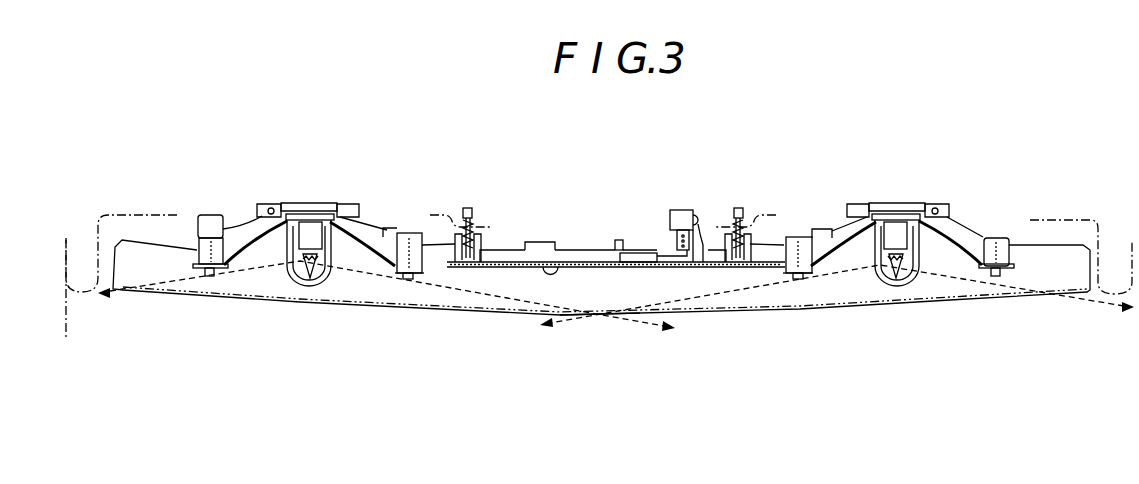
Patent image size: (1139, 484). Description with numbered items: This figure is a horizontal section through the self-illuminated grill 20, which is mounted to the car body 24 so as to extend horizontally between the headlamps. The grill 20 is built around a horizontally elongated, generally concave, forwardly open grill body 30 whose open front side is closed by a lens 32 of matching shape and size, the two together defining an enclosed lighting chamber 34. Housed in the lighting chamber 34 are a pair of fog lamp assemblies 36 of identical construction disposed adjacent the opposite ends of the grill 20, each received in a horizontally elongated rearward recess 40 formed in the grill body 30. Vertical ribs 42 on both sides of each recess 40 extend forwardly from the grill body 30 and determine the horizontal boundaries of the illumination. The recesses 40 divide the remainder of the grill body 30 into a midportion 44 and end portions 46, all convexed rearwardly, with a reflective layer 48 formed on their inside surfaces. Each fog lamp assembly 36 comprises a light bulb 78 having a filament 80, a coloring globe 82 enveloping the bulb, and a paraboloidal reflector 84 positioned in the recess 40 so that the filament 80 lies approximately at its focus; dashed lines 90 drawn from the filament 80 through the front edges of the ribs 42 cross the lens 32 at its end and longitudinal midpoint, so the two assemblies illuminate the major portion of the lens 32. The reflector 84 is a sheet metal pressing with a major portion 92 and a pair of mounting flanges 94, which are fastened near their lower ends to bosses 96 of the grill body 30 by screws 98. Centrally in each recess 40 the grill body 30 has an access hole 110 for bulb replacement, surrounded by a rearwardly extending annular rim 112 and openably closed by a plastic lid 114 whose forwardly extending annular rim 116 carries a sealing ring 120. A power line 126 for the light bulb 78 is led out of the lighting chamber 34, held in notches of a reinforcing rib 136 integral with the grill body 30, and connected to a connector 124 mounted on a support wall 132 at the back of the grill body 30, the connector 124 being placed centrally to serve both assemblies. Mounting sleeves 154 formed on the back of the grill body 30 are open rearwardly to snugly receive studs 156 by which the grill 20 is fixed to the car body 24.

The self-illuminated grill 20 is at (1066, 118).
The car body 24 is at (67, 299).
The grill body 30 is at (583, 251).
The lens 32 is at (600, 316).
The lighting chamber 34 is at (605, 300).
The fog lamp assembly 36 is at (281, 285).
The rearward recess 40 is at (409, 232).
The vertical rib 42 is at (199, 213).
The midportion 44 is at (560, 243).
The end portion 46 is at (177, 214).
The reflective layer 48 is at (138, 295).
The light bulb 78 is at (312, 288).
The filament 80 is at (300, 289).
The coloring globe 82 is at (336, 284).
The paraboloidal reflector 84 is at (388, 229).
The dashed lines 90 is at (187, 280).
The major portion 92 is at (246, 212).
The mounting flange 94 is at (226, 269).
The boss 96 is at (221, 215).
The screw 98 is at (210, 277).
The access hole 110 is at (294, 203).
The annular rim 112 is at (356, 203).
The lid 114 is at (313, 213).
The annular rim 116 is at (368, 234).
The sealing ring 120 is at (264, 208).
The connector 124 is at (679, 210).
The power line 126 is at (640, 253).
The support wall 132 is at (701, 224).
The reinforcing rib 136 is at (619, 240).
The mounting sleeve 154 is at (480, 232).
The stud 156 is at (462, 216).